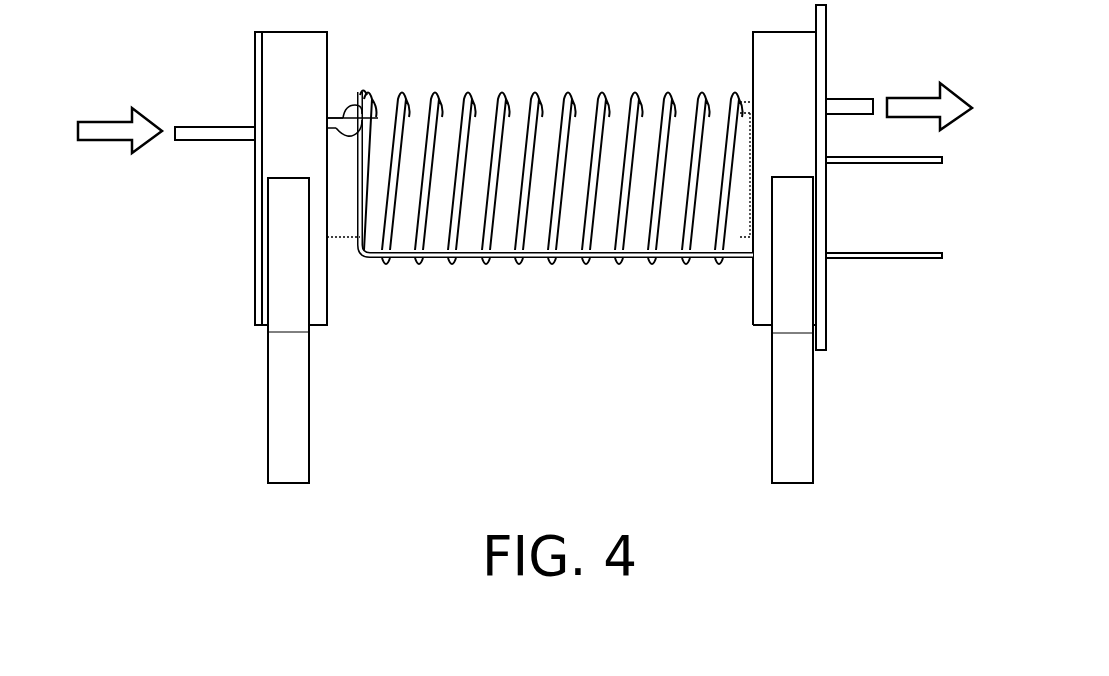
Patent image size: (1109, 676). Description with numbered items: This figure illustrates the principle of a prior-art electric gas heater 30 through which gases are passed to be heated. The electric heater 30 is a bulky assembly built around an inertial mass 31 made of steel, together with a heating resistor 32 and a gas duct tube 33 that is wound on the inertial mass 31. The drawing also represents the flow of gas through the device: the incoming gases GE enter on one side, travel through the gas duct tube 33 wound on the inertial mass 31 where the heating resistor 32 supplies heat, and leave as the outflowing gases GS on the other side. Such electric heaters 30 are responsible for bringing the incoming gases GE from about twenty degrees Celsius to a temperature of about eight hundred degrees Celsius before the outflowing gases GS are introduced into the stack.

The electric heater 30 is at (230, 209).
The inertial mass 31 is at (342, 228).
The heating resistor 32 is at (908, 160).
The gas duct tube 33 is at (211, 130).
The incoming gases GE is at (105, 128).
The outflowing gases GS is at (922, 105).